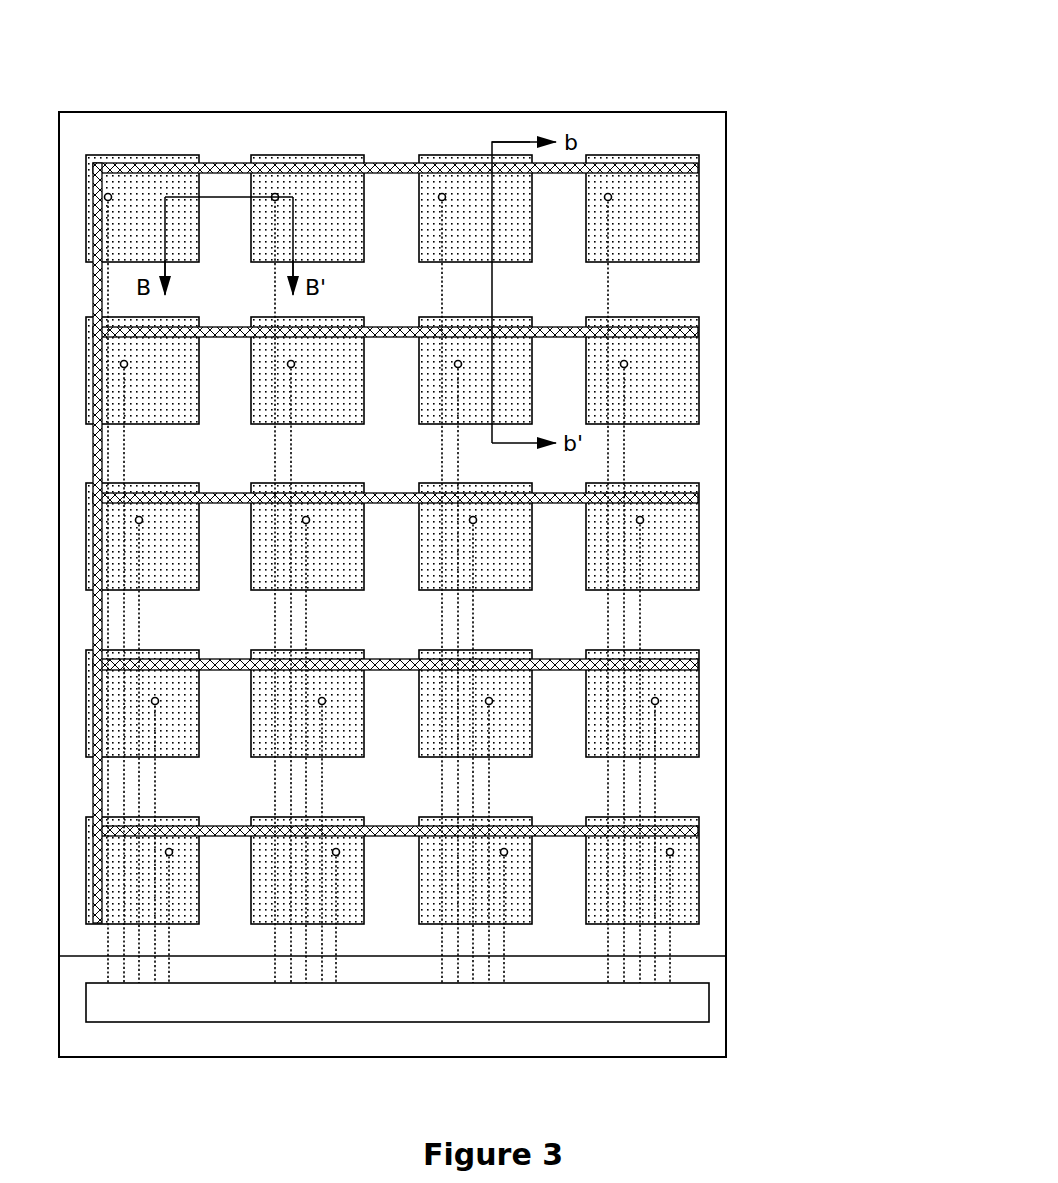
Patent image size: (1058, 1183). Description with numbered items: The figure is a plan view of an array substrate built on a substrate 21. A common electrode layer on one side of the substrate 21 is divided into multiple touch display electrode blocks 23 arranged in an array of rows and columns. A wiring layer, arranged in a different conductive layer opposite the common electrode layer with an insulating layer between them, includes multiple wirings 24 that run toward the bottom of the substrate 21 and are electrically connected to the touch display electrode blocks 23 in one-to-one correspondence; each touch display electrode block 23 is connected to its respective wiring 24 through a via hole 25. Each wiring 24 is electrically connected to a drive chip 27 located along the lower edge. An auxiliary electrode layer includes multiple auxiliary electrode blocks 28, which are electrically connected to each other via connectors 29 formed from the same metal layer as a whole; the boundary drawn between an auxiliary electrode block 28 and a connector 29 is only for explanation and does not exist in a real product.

The substrate 21 is at (533, 112).
The touch display electrode block 23 is at (699, 530).
The wiring 24 is at (642, 617).
The via hole 25 is at (633, 360).
The drive chip 27 is at (530, 1022).
The auxiliary electrode block 28 is at (139, 197).
The connector 29 is at (392, 163).